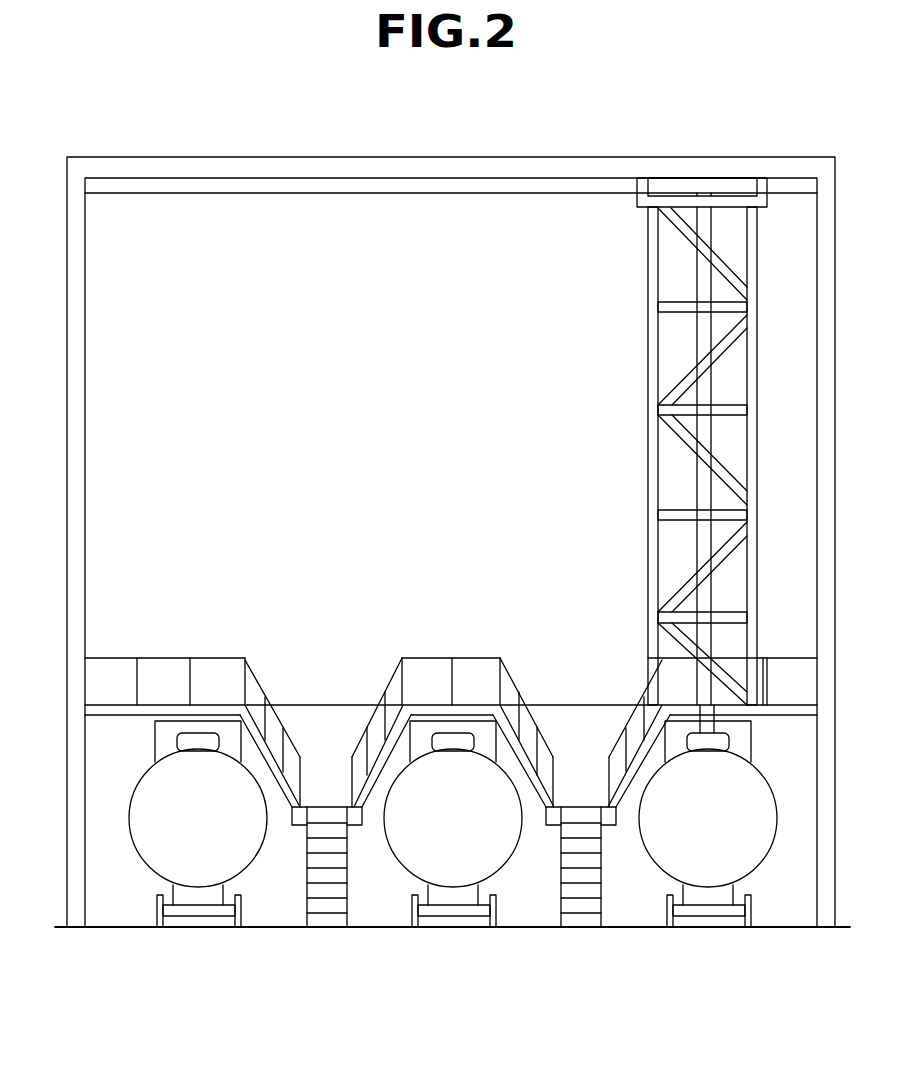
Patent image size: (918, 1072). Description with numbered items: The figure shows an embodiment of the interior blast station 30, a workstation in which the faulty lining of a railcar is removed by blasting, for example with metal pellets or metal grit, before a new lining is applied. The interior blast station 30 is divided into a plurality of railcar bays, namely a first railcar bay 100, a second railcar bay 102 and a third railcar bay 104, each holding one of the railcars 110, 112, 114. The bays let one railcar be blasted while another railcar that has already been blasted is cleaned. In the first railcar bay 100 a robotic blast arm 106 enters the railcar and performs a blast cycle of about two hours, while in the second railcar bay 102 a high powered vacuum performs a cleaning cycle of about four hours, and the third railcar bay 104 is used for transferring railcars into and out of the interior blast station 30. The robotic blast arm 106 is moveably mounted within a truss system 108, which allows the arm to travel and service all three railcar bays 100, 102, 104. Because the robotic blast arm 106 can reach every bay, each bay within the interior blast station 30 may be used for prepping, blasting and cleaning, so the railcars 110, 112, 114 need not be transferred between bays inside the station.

The interior blast station 30 is at (268, 136).
The first railcar bay 100 is at (630, 897).
The second railcar bay 102 is at (363, 893).
The third railcar bay 104 is at (115, 882).
The robotic blast arm 106 is at (702, 485).
The truss system 108 is at (653, 333).
The railcar 110 is at (703, 838).
The railcar 112 is at (447, 838).
The railcar 114 is at (203, 840).